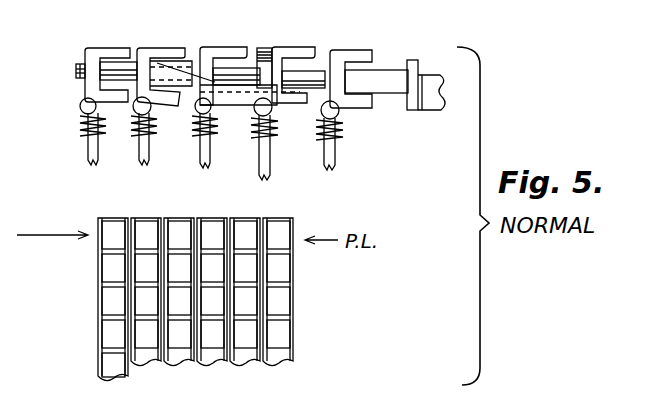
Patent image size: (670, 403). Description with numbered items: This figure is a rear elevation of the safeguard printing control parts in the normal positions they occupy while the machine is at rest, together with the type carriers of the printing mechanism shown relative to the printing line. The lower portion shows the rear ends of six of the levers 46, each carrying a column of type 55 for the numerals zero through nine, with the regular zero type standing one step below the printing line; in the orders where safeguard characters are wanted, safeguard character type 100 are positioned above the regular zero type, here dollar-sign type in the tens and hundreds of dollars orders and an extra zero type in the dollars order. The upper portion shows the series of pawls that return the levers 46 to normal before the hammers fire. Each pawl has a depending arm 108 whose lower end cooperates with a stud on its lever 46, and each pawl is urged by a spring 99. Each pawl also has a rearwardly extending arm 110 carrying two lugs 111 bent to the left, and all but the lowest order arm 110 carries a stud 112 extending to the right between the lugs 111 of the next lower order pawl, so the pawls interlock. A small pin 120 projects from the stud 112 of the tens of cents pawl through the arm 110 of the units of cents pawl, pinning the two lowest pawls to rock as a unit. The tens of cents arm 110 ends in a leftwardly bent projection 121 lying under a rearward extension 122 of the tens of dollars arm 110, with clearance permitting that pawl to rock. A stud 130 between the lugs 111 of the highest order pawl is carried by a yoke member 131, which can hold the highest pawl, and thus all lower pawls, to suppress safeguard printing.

The lever 46 is at (137, 220).
The type 55 is at (100, 273).
The spring 99 is at (320, 125).
The safeguard character type 100 is at (217, 222).
The depending arm 108 is at (261, 168).
The rearwardly extending arm 110 is at (85, 78).
The lugs 111 is at (118, 50).
The stud 112 is at (250, 63).
The pin 120 is at (76, 67).
The projection 121 is at (240, 106).
The rearward extension 122 is at (266, 53).
The stud 130 is at (388, 85).
The yoke member 131 is at (436, 112).